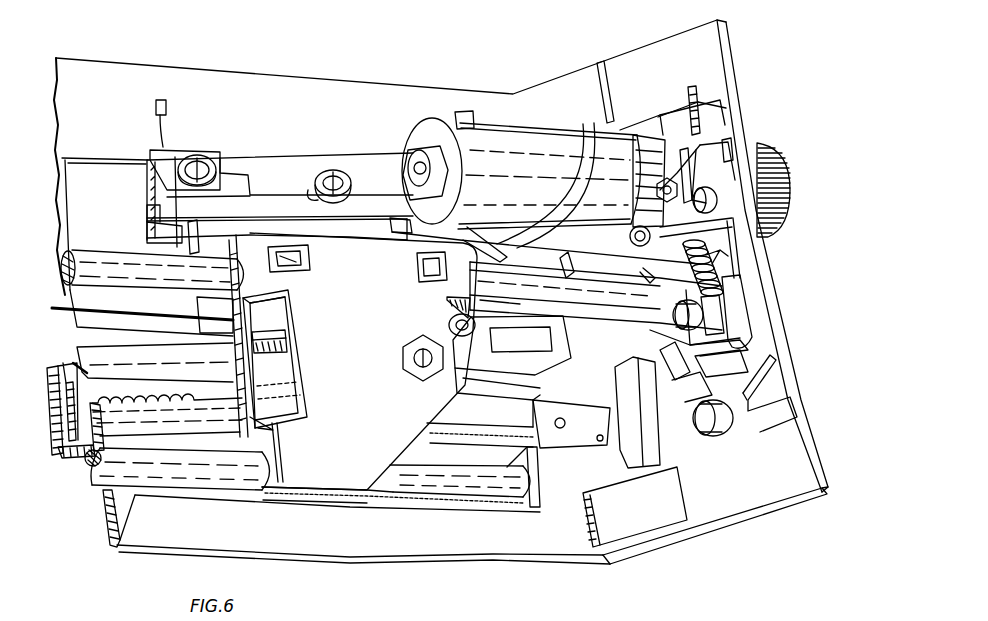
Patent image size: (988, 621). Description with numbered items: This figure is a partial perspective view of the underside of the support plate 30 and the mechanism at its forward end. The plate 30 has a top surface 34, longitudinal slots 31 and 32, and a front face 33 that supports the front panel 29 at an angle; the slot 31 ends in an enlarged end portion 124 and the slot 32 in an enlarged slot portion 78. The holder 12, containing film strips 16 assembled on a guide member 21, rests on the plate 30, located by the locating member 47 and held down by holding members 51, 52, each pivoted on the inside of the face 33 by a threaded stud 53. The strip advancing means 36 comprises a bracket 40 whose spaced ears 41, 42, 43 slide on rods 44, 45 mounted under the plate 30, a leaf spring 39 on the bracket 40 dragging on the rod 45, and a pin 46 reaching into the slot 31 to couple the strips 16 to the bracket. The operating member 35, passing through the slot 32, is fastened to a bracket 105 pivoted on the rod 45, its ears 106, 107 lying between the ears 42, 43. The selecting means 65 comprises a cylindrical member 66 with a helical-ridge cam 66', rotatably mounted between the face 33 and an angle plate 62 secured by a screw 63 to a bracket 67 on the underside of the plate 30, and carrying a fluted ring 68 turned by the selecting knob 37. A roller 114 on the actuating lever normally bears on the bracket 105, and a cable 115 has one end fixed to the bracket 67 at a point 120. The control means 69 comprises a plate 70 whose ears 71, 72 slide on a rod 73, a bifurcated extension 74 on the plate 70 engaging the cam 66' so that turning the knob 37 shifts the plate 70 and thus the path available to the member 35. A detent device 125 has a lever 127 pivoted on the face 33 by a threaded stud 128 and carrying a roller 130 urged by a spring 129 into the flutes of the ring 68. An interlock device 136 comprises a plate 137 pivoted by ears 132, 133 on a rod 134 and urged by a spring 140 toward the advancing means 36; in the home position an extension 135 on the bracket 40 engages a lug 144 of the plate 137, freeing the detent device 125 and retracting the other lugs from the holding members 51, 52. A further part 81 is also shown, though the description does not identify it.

The holder 12 is at (78, 460).
The film strips 16 is at (56, 367).
The guide member 21 is at (227, 405).
The front panel 29 is at (736, 500).
The support plate 30 is at (174, 80).
The longitudinal slot 31 is at (170, 395).
The longitudinal slot 32 is at (145, 344).
The front face 33 is at (762, 357).
The top surface 34 is at (342, 560).
The operating member 35 is at (265, 344).
The strip advancing means 36 is at (349, 371).
The selecting knob 37 is at (775, 148).
The leaf spring 39 is at (310, 259).
The bracket 40 is at (387, 478).
The ear 41 is at (217, 256).
The ear 42 is at (267, 487).
The ear 43 is at (478, 308).
The rod 44 is at (180, 488).
The rod 45 is at (138, 224).
The pin 46 is at (420, 358).
The locating member 47 is at (633, 390).
The holding member 51 is at (675, 446).
The holding member 52 is at (666, 358).
The threaded stud 53 is at (674, 305).
The angle plate 62 is at (366, 170).
The screw 63 is at (331, 172).
The selecting means 65 is at (500, 116).
The cylindrical member 66 is at (547, 171).
The helical-ridge cam 66' is at (546, 185).
The bracket 67 is at (102, 175).
The fluted ring 68 is at (638, 134).
The control means 69 is at (522, 258).
The plate 70 is at (472, 362).
The ear 71 is at (152, 270).
The ear 72 is at (570, 263).
The rod 73 is at (527, 301).
The bifurcated extension 74 is at (487, 238).
The enlarged slot portion 78 is at (497, 334).
The plate edge 81 is at (500, 336).
The bracket 105 is at (272, 316).
The ear 106 is at (255, 303).
The ear 107 is at (446, 311).
The roller 114 is at (449, 333).
The cable 115 is at (142, 313).
The cable fixing point 120 is at (168, 148).
The enlarged end portion 124 is at (577, 443).
The detent device 125 is at (716, 130).
The lever 127 is at (666, 176).
The threaded stud 128 is at (633, 195).
The spring 129 is at (717, 206).
The roller 130 is at (630, 227).
The ear 132 is at (738, 334).
The ear 133 is at (741, 251).
The rod 134 is at (725, 309).
The extension 135 is at (463, 224).
The interlock device 136 is at (741, 280).
The plate 137 is at (733, 317).
The spring 140 is at (711, 264).
The lug 144 is at (647, 273).